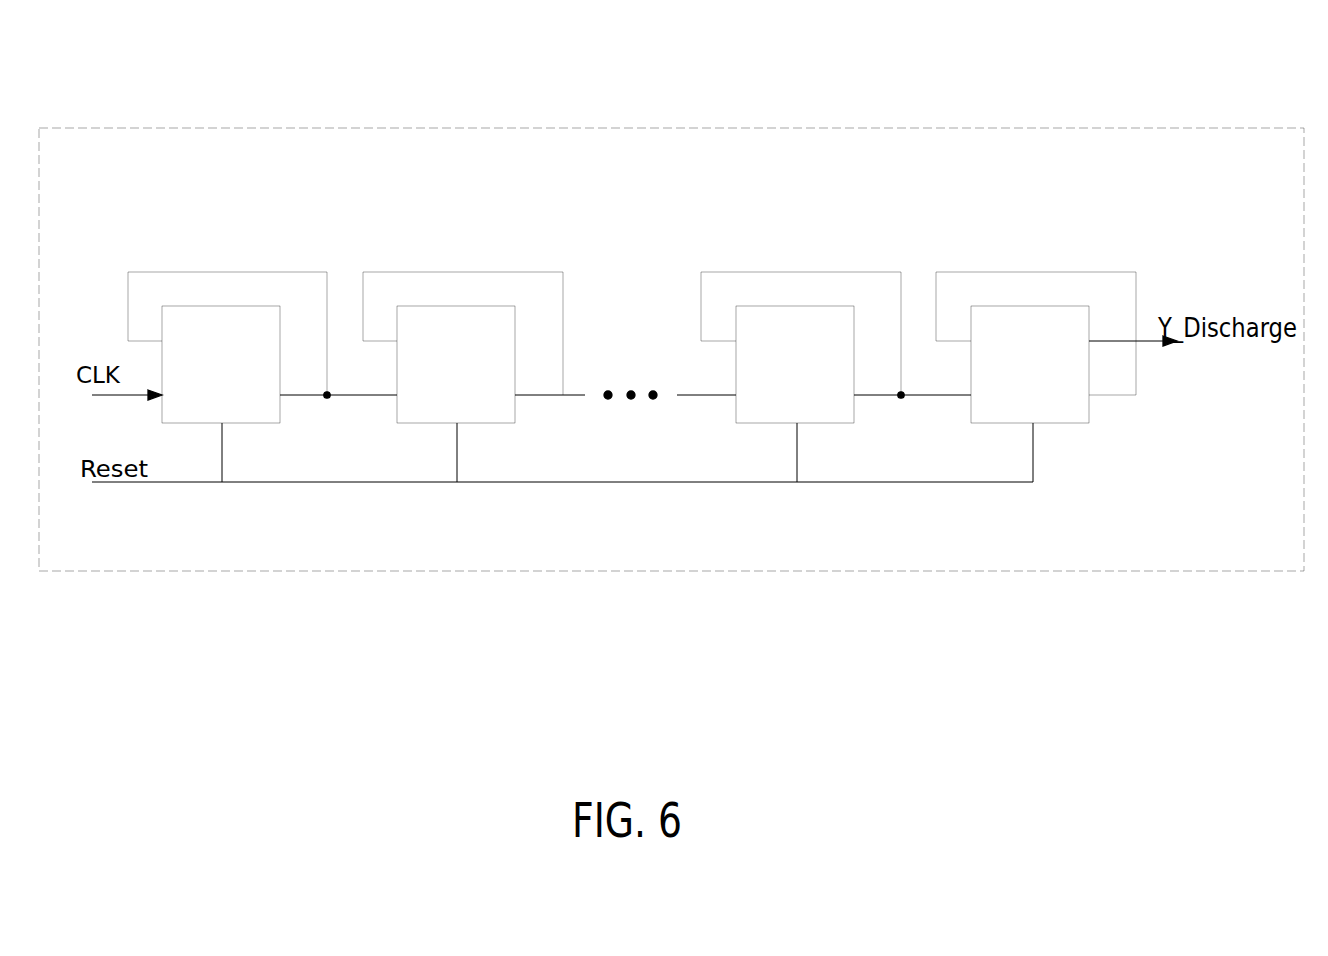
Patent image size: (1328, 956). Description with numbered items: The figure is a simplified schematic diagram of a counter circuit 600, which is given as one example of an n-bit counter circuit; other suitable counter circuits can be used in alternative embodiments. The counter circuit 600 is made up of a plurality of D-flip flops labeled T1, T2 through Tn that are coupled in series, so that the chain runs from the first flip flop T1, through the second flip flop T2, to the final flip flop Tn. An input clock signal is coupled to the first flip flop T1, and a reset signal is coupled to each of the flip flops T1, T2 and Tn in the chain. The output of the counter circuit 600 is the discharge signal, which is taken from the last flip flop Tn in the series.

The counter circuit 600 is at (689, 128).
The D-flip flop T1 is at (227, 347).
The D-flip flop T2 is at (463, 347).
The D-flip flop Tn is at (1036, 347).